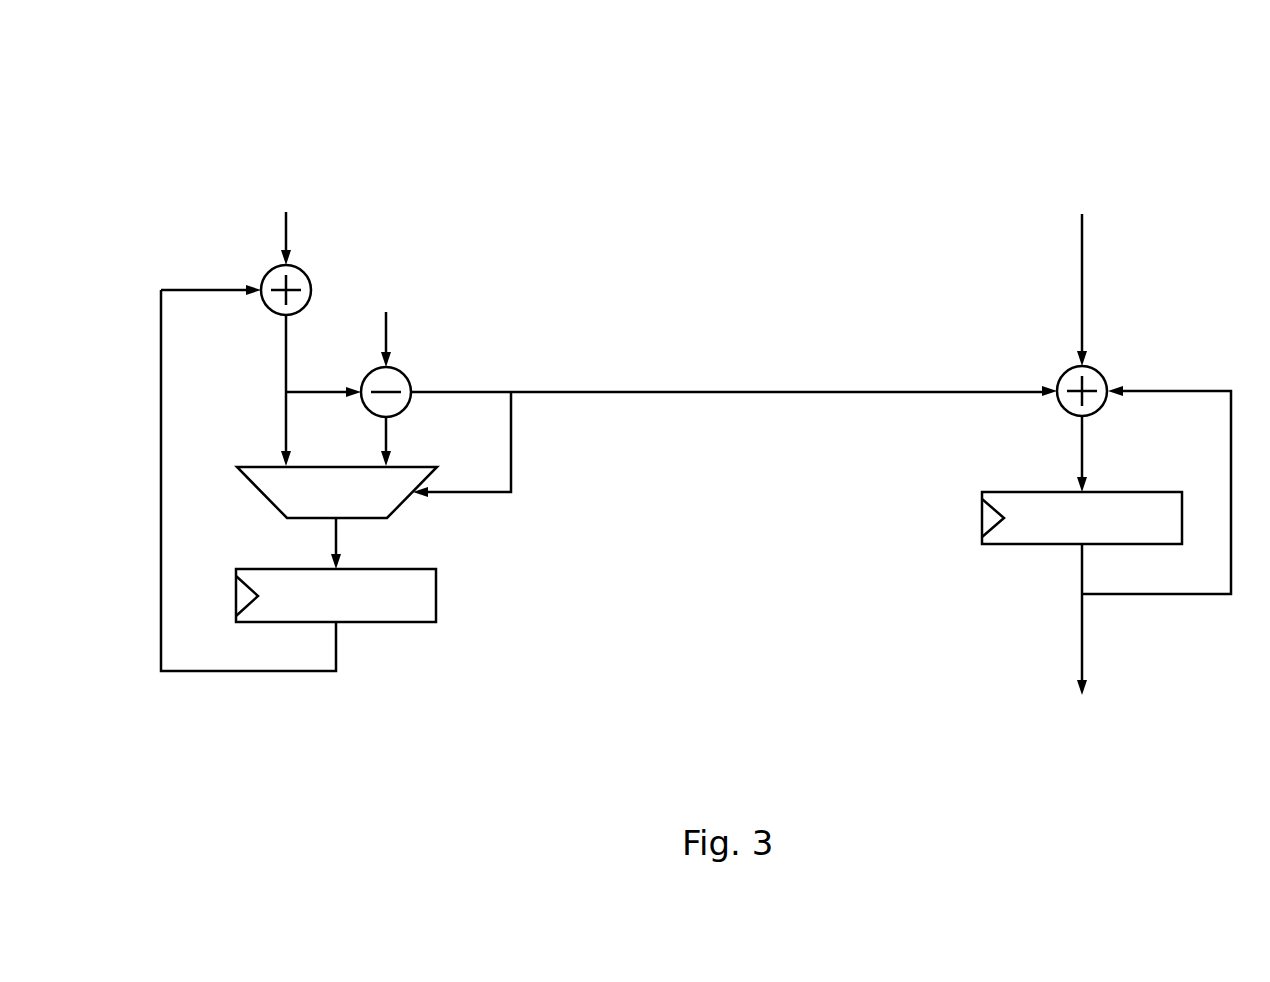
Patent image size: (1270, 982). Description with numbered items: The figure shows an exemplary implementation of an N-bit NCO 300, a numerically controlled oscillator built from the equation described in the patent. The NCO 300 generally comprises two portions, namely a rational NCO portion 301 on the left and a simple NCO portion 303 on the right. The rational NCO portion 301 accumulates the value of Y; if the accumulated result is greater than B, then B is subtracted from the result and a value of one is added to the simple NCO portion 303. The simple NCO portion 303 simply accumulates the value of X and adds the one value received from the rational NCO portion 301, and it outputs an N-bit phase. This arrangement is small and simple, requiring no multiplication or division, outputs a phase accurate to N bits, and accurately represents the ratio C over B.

The N-bit NCO 300 is at (921, 58).
The rational NCO portion 301 is at (190, 185).
The simple NCO portion 303 is at (1229, 187).